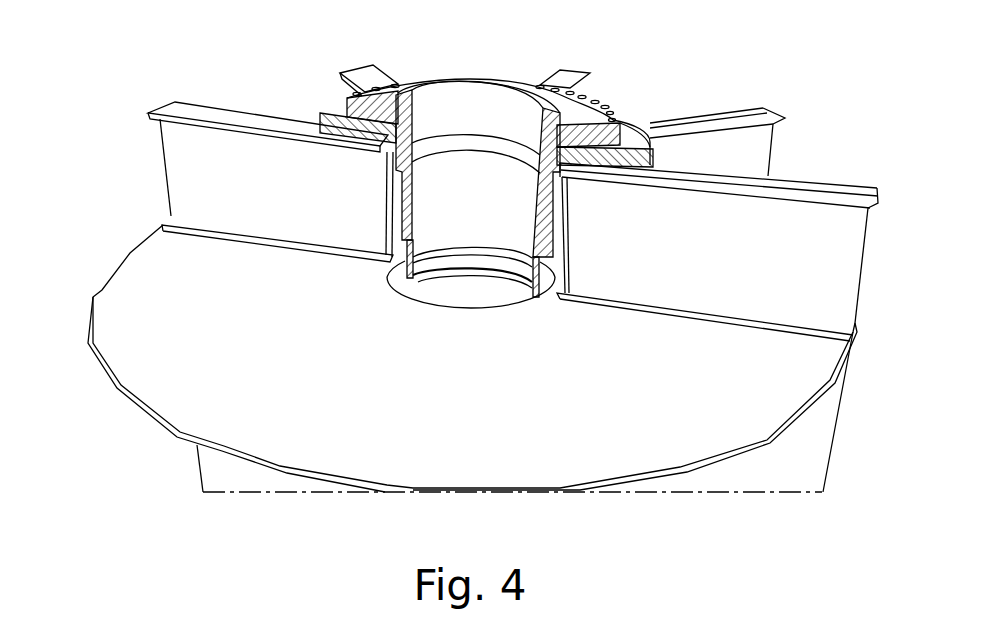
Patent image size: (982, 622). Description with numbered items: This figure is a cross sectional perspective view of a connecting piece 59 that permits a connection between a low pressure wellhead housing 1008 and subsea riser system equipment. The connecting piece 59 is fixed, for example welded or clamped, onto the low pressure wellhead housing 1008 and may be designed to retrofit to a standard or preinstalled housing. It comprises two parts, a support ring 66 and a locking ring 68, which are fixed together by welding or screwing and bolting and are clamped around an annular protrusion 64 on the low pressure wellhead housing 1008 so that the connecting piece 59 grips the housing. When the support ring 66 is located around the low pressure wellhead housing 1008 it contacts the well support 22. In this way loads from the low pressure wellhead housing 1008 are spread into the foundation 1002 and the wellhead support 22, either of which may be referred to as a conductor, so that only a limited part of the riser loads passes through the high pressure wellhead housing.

The well support 22 is at (853, 268).
The connecting piece 59 is at (311, 86).
The annular protrusion 64 is at (407, 93).
The support ring 66 is at (633, 120).
The locking ring 68 is at (602, 102).
The foundation 1002 is at (146, 444).
The low pressure wellhead housing 1008 is at (510, 82).